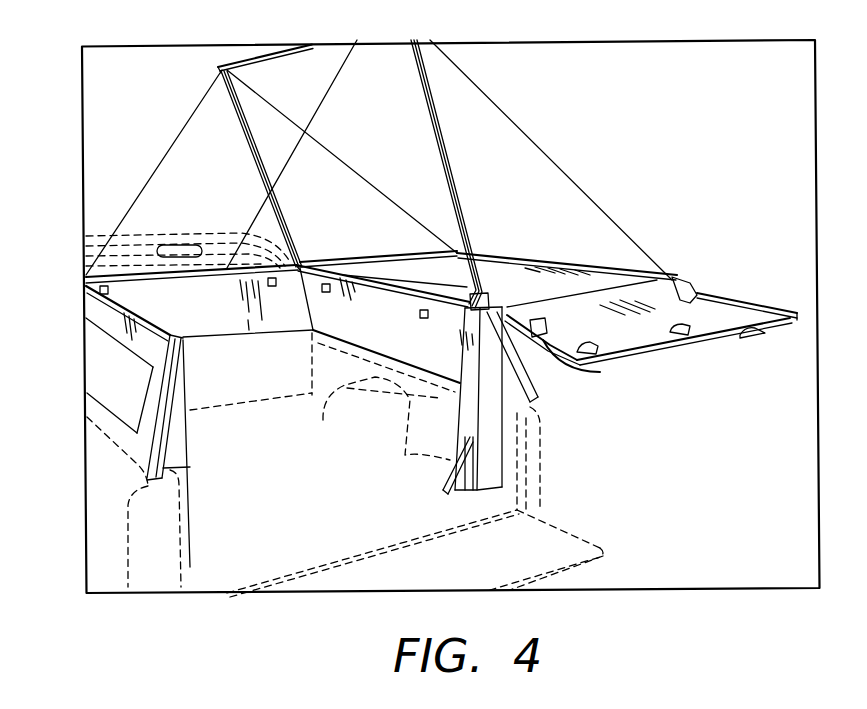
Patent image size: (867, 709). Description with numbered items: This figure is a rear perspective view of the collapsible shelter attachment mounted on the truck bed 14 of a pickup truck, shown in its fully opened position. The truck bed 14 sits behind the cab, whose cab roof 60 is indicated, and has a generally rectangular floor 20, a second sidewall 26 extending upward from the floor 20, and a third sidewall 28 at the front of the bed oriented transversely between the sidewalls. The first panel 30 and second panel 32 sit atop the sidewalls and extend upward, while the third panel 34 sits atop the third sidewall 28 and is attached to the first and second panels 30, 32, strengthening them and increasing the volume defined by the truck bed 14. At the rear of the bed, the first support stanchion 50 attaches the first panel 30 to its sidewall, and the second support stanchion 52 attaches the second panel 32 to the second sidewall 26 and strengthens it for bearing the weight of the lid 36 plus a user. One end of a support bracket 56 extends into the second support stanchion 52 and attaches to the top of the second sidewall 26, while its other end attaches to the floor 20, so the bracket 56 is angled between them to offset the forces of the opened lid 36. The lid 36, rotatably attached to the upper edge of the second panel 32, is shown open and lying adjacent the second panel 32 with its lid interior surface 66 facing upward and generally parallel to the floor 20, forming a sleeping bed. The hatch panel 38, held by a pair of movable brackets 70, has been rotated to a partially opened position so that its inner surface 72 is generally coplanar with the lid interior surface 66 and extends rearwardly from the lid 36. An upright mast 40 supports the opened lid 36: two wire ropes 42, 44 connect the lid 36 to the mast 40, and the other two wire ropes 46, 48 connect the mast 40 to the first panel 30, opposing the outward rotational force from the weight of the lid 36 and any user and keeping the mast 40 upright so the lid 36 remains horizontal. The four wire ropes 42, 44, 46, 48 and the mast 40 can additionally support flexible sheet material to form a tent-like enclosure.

The truck bed 14 is at (313, 543).
The floor 20 is at (223, 552).
The second sidewall 26 is at (443, 403).
The third sidewall 28 is at (272, 352).
The first panel 30 is at (113, 367).
The second panel 32 is at (395, 333).
The third panel 34 is at (195, 310).
The lid 36 is at (593, 262).
The hatch panel 38 is at (673, 340).
The mast 40 is at (240, 115).
The wire rope 42 is at (345, 163).
The wire rope 44 is at (530, 136).
The wire rope 46 is at (187, 118).
The wire rope 48 is at (335, 88).
The first support stanchion 50 is at (177, 450).
The second support stanchion 52 is at (490, 383).
The support bracket 56 is at (490, 490).
The cab roof 60 is at (92, 243).
The lid interior surface 66 is at (497, 268).
The movable brackets 70 is at (589, 366).
The inner surface of the hatch panel 72 is at (713, 300).